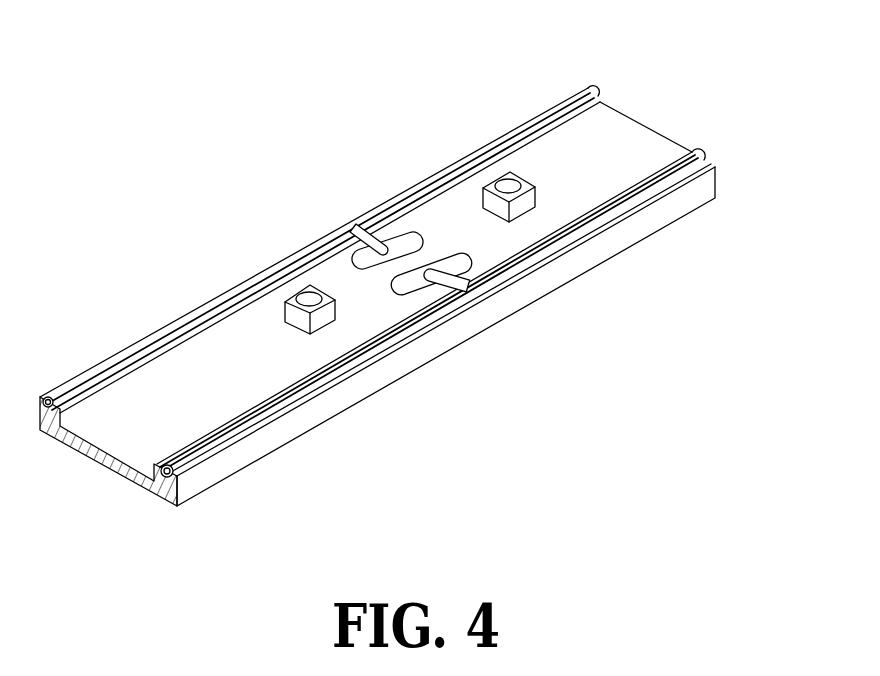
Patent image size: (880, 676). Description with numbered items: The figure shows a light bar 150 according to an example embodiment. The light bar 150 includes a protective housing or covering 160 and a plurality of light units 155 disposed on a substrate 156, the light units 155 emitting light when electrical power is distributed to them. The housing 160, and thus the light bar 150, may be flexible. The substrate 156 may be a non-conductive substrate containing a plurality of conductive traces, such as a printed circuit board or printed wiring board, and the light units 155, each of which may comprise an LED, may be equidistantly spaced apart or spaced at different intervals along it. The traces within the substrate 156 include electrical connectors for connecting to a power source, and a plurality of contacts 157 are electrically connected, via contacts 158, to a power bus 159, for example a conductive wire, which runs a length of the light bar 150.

The light bar 150 is at (384, 283).
The light unit 155 is at (284, 308).
The substrate 156 is at (102, 440).
The contact 157 is at (417, 232).
The contact 158 is at (347, 244).
The power bus 159 is at (483, 165).
The protective housing or covering 160 is at (216, 466).